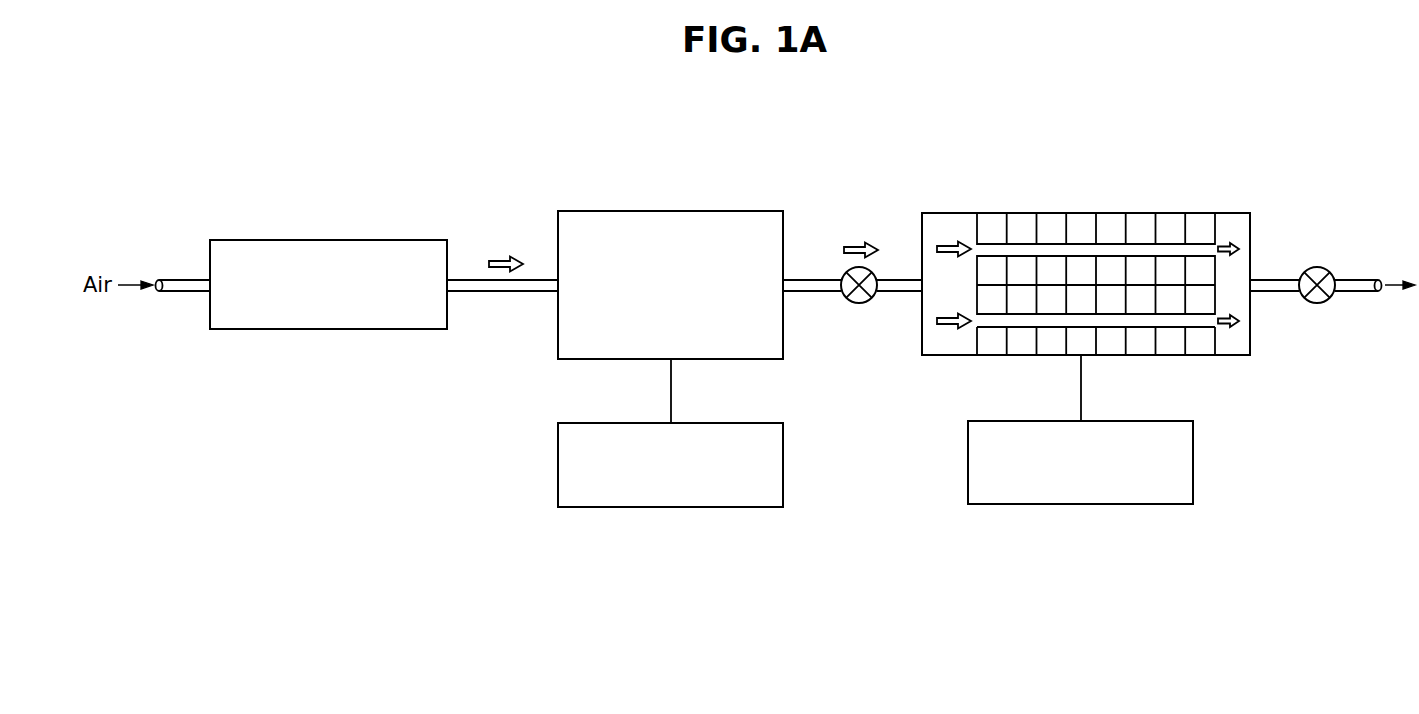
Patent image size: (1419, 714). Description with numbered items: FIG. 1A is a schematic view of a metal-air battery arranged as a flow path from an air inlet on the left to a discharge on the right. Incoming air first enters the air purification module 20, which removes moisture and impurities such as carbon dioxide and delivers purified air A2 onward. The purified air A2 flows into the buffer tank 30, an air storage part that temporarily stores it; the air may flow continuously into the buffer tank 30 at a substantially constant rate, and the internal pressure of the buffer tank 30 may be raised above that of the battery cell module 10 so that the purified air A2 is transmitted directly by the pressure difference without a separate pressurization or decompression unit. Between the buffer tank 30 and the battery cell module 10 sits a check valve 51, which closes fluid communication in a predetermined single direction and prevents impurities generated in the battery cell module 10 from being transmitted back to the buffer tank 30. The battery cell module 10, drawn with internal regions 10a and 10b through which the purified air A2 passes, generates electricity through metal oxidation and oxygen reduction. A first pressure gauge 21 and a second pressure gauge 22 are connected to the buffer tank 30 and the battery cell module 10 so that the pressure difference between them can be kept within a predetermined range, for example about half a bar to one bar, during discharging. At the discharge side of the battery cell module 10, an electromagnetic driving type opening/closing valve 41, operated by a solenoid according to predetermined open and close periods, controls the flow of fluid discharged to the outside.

The battery cell module 10 is at (952, 213).
The first membrane region 10a is at (1200, 262).
The second membrane region 10b is at (1200, 302).
The air purification module 20 is at (328, 240).
The first pressure gauge 21 is at (671, 507).
The second pressure gauge 22 is at (1081, 504).
The buffer tank 30 is at (673, 211).
The electromagnetic driving type opening/closing valve 41 is at (1317, 303).
The check valve 51 is at (859, 303).
The purified air A2 is at (860, 235).